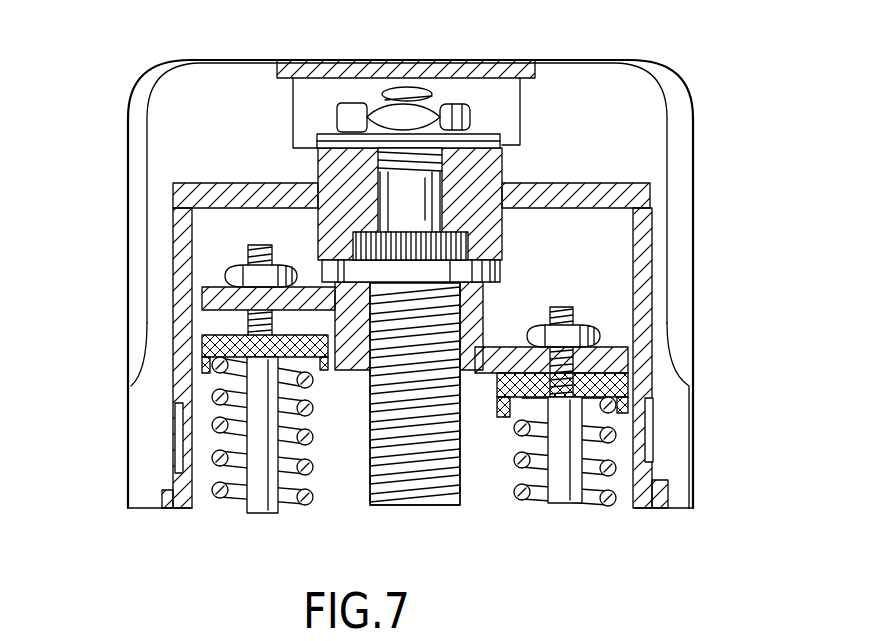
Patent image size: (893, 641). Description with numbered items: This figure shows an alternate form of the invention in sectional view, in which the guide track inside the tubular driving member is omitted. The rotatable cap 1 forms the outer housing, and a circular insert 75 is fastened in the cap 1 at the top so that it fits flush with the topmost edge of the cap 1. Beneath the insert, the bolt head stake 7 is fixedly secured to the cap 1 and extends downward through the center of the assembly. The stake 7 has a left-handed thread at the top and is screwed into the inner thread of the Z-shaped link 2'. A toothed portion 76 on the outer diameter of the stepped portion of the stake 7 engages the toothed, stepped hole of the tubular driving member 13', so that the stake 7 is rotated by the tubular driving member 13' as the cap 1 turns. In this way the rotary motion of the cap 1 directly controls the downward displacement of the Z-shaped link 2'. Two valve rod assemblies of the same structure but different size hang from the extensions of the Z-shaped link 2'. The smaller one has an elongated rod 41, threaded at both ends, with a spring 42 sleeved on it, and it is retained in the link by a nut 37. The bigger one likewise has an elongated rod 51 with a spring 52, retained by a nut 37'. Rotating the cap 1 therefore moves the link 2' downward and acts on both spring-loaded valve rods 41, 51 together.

The cap 1 is at (223, 72).
The circular insert 75 is at (400, 62).
The toothed portion 76 is at (427, 293).
The tubular driving member 13' is at (411, 321).
The Z-shaped link 2' is at (437, 298).
The nut 37 is at (198, 343).
The nut 37' is at (623, 378).
The spring 42 is at (220, 458).
The elongated rod 41 is at (263, 505).
The bolt head stake 7 is at (425, 463).
The spring 52 is at (613, 435).
The elongated rod 51 is at (566, 500).